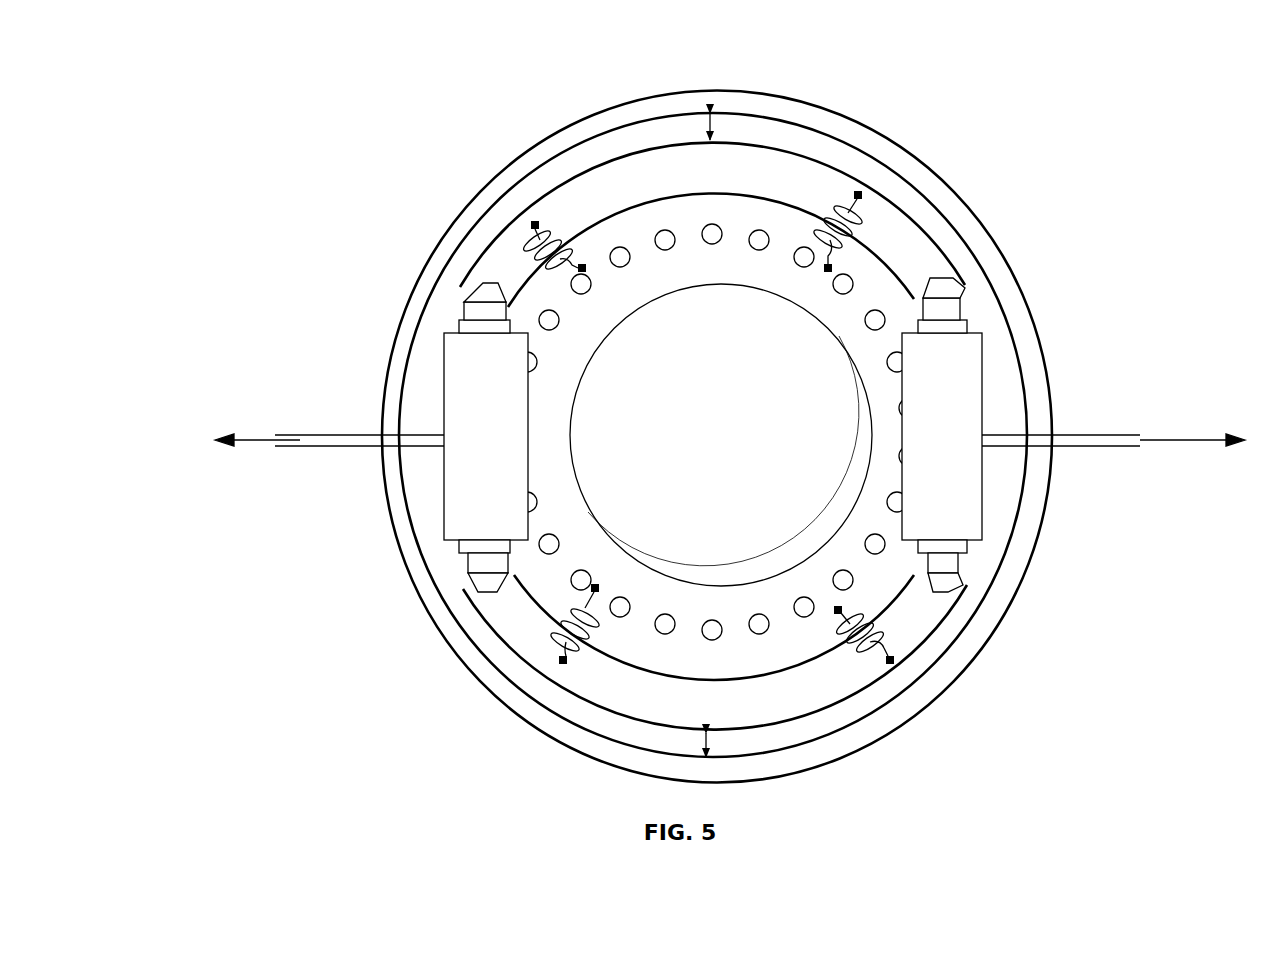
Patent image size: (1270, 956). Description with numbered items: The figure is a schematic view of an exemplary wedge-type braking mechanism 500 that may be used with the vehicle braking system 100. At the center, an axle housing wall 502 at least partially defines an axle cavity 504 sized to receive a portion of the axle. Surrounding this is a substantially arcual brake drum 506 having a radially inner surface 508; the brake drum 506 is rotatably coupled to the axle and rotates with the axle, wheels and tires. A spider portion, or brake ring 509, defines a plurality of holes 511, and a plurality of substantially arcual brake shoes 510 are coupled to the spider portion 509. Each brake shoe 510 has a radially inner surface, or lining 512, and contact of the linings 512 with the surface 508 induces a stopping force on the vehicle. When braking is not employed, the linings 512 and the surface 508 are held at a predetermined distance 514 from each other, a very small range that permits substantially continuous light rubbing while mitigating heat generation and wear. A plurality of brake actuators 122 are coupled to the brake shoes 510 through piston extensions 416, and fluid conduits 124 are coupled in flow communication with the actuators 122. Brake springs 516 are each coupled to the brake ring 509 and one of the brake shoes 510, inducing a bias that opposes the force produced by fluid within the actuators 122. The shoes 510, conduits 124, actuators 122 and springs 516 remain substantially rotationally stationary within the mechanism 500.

The vehicle braking system 100 is at (345, 155).
The braking mechanism 500 is at (305, 205).
The brake actuator 122 is at (468, 396).
The fluid conduit 124 is at (272, 430).
The piston extension 416 is at (493, 300).
The axle housing wall 502 is at (721, 435).
The axle cavity 504 is at (710, 470).
The brake drum 506 is at (948, 186).
The radially inner surface 508 is at (520, 187).
The spider portion 509 is at (712, 432).
The brake shoe 510 is at (690, 191).
The hole 511 is at (755, 250).
The lining 512 is at (633, 147).
The predetermined distance 514 is at (718, 127).
The brake spring 516 is at (535, 250).